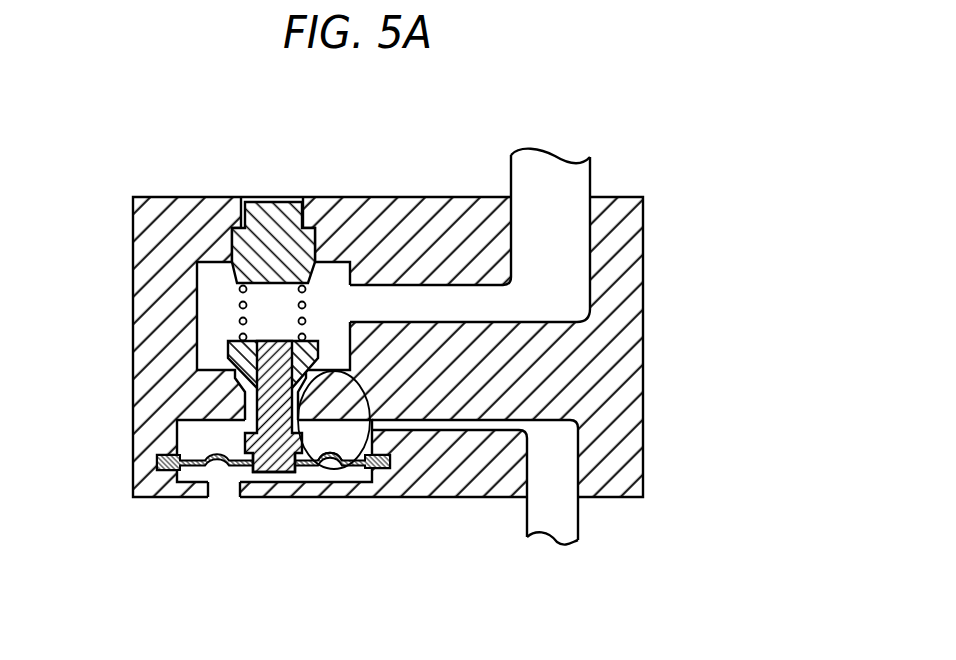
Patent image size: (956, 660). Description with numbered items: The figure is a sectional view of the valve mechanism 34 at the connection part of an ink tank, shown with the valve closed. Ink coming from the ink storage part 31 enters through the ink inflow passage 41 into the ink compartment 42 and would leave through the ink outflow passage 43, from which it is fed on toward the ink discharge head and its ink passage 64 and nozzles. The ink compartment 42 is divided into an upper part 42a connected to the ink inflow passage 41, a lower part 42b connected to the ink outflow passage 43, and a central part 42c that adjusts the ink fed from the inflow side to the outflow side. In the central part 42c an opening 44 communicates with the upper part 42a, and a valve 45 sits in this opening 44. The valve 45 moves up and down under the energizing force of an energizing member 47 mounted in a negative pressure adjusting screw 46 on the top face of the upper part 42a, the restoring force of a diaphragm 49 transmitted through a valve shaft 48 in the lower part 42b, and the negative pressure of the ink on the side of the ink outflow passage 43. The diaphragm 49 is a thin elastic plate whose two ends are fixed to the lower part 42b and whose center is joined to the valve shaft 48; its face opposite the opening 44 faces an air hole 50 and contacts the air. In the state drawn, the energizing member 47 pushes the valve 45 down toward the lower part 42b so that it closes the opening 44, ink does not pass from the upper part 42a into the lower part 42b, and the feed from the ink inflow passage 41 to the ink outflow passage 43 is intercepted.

The valve mechanism 34 is at (126, 178).
The ink storage part 31 is at (549, 150).
The ink inflow passage 41 is at (555, 227).
The ink outflow passage 43 is at (553, 462).
The ink passage 64 is at (555, 548).
The negative pressure adjusting screw 46 is at (268, 203).
The energizing member 47 is at (237, 292).
The ink compartment 42 is at (189, 406).
The upper part 42a is at (212, 354).
The central part 42c is at (250, 386).
The lower part 42b is at (195, 437).
The diaphragm 49 is at (157, 462).
The air hole 50 is at (214, 490).
The valve shaft 48 is at (273, 463).
The valve 45 is at (330, 457).
The opening 44 is at (353, 470).